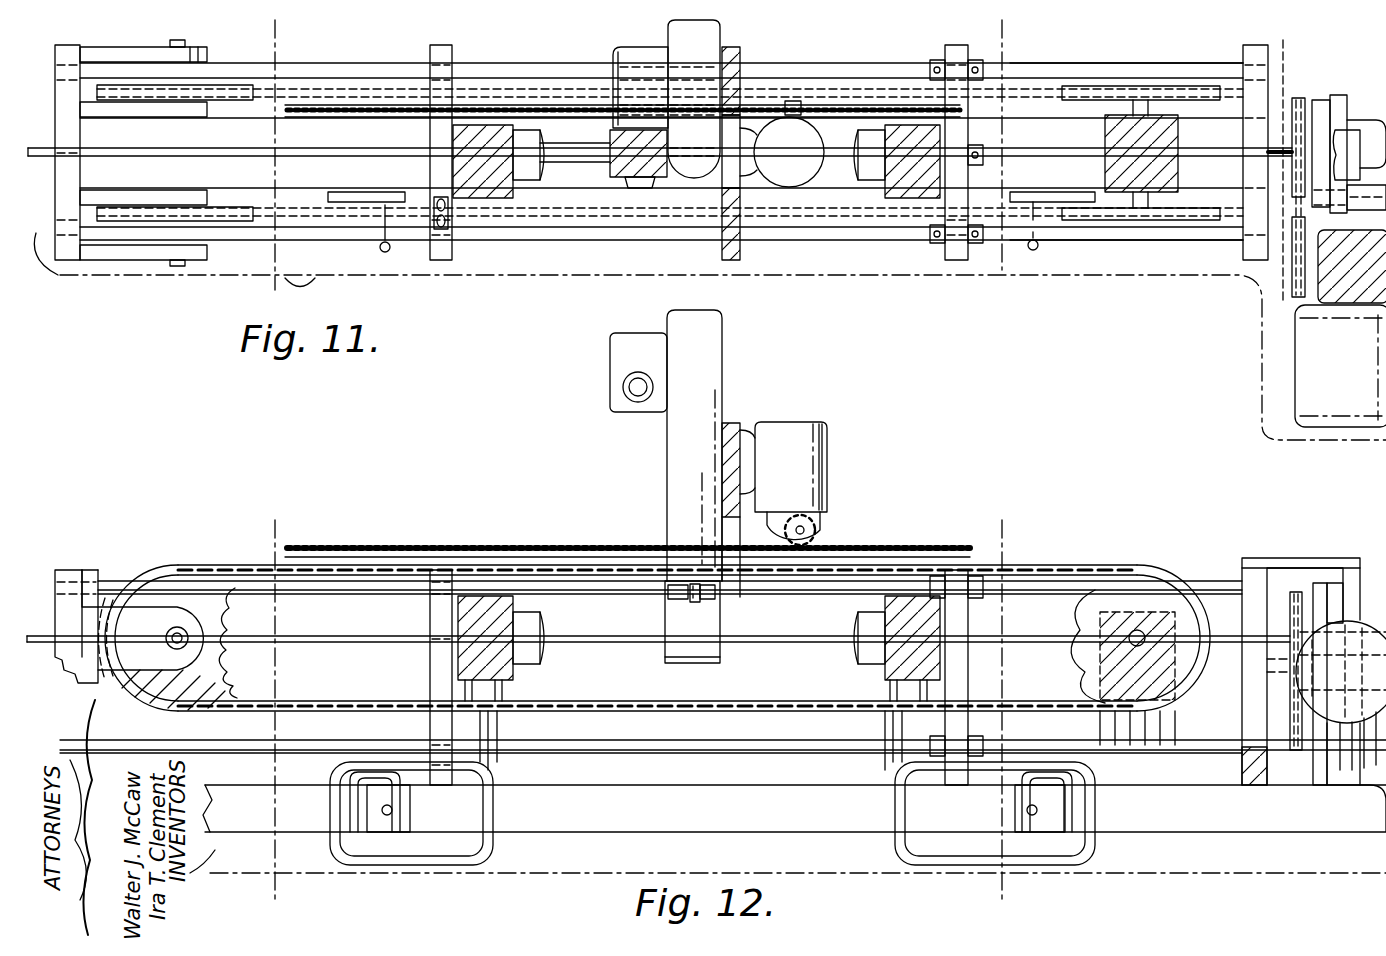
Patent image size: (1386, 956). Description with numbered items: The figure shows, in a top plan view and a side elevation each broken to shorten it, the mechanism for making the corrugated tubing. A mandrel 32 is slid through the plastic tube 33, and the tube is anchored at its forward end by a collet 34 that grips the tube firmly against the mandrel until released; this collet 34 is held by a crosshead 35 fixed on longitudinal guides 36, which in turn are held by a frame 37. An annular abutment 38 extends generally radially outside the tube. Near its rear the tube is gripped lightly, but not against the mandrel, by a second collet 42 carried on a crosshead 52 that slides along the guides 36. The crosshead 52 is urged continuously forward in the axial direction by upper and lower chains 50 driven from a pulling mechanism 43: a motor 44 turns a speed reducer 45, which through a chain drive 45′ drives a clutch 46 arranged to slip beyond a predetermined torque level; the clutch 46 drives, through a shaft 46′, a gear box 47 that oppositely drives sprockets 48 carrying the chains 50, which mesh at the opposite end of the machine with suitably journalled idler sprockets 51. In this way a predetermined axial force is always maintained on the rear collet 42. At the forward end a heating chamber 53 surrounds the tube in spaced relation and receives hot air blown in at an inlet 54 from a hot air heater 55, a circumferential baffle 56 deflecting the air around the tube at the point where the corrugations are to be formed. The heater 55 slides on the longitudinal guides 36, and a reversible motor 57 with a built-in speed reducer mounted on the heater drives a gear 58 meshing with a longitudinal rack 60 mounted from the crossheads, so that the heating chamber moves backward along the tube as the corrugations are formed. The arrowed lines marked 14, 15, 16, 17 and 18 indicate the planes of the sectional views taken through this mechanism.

In FIG. 11, the section line 14- 14 is at (600, 60).
In FIG. 11, the section line 15- 15 is at (833, 60).
In FIG. 11, the section line 16- 16 is at (562, 33).
In FIG. 11, the section line 17- 17 is at (1298, 32).
In FIG. 11, the section line 18- 18 is at (242, 33).
In FIG. 11, the mandrel 32 is at (590, 145).
In FIG. 12, the mandrel 32 is at (796, 628).
In FIG. 12, the plastic tube 33 is at (612, 645).
In FIG. 11, the collet 34 is at (870, 168).
In FIG. 12, the collet 34 is at (868, 650).
In FIG. 11, the crosshead 35 is at (955, 260).
In FIG. 12, the crosshead 35 is at (958, 785).
In FIG. 11, the longitudinal guides 36 is at (1125, 78).
In FIG. 12, the longitudinal guides 36 is at (1203, 580).
In FIG. 11, the frame 37 is at (1250, 50).
In FIG. 12, the frame 37 is at (1250, 815).
In FIG. 11, the annular abutment 38 is at (853, 152).
In FIG. 12, the annular abutment 38 is at (860, 640).
In FIG. 11, the collet 42 is at (528, 168).
In FIG. 12, the collet 42 is at (535, 660).
In FIG. 11, the pulling mechanism 43 is at (1358, 108).
In FIG. 12, the pulling mechanism 43 is at (1362, 585).
In FIG. 11, the motor 44 is at (1340, 366).
In FIG. 12, the motor 44 is at (1341, 703).
In FIG. 11, the speed reducer 45 is at (1352, 270).
In FIG. 11, the chain drive 45′ is at (1299, 100).
In FIG. 12, the chain drive 45′ is at (1284, 590).
In FIG. 12, the clutch 46 is at (1318, 583).
In FIG. 11, the shaft 46′ is at (1212, 150).
In FIG. 12, the shaft 46′ is at (1170, 682).
In FIG. 11, the gear box 47 is at (1141, 155).
In FIG. 12, the gear box 47 is at (1175, 712).
In FIG. 11, the sprockets 48 is at (1208, 100).
In FIG. 12, the sprockets 48 is at (1075, 610).
In FIG. 11, the chains 50 is at (1032, 92).
In FIG. 12, the chains 50 is at (1062, 575).
In FIG. 11, the idler sprockets 51 is at (233, 123).
In FIG. 12, the idler sprockets 51 is at (170, 600).
In FIG. 11, the crosshead 52 is at (442, 262).
In FIG. 12, the crosshead 52 is at (425, 608).
In FIG. 11, the heating chamber 53 is at (608, 175).
In FIG. 12, the heating chamber 53 is at (672, 664).
In FIG. 12, the hot air inlet 54 is at (675, 477).
In FIG. 11, the hot air heater 55 is at (694, 99).
In FIG. 12, the hot air heater 55 is at (707, 362).
In FIG. 12, the circumferential baffle 56 is at (705, 625).
In FIG. 11, the reversible motor 57 is at (782, 152).
In FIG. 12, the reversible motor 57 is at (795, 465).
In FIG. 11, the gear 58 is at (793, 102).
In FIG. 12, the gear 58 is at (815, 535).
In FIG. 11, the longitudinal rack 60 is at (888, 108).
In FIG. 12, the longitudinal rack 60 is at (890, 548).